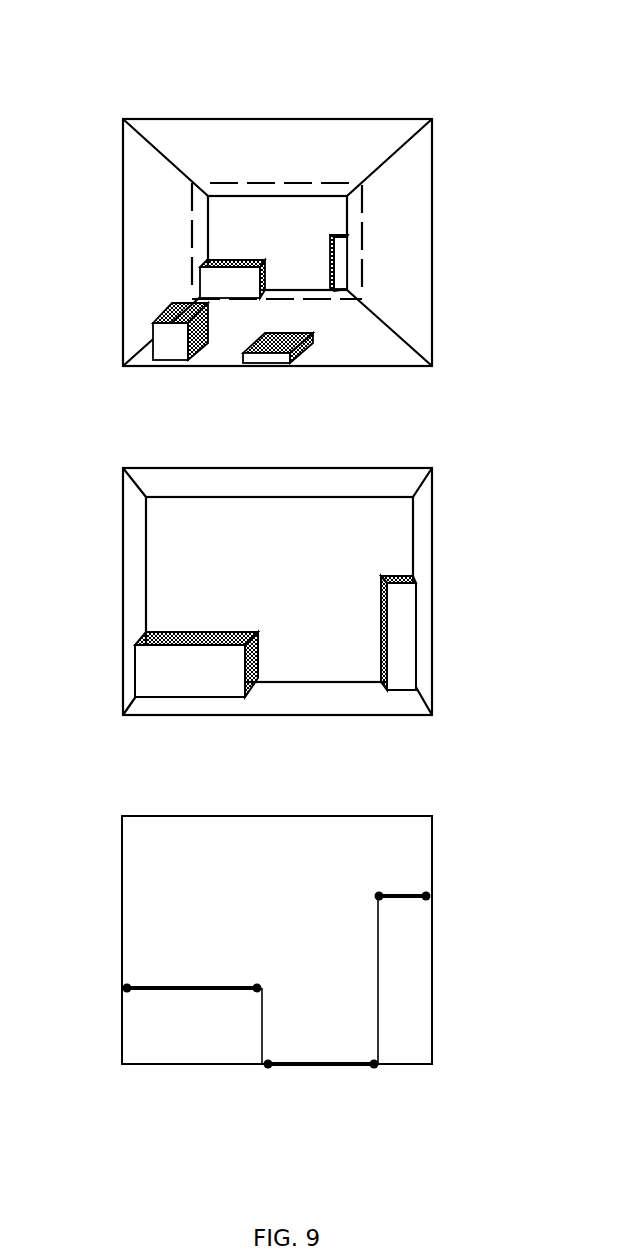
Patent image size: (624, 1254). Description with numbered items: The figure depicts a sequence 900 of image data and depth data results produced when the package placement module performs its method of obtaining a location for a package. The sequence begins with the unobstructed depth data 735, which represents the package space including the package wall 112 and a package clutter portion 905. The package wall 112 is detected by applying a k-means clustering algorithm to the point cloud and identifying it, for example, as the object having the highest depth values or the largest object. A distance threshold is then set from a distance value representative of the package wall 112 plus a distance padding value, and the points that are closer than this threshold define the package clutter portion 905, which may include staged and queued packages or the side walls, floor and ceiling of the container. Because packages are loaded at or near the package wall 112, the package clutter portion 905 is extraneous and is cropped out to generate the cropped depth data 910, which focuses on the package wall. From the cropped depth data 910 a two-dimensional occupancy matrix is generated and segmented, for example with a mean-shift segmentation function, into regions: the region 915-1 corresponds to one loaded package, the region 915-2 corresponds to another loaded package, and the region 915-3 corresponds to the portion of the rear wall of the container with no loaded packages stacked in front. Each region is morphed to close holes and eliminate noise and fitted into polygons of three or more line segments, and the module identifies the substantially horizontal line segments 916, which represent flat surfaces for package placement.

The sequence 900 is at (482, 61).
The unobstructed depth data 735 is at (178, 115).
The package wall 112 is at (279, 180).
The package clutter portion 905 is at (407, 266).
The cropped depth data 910 is at (361, 462).
The region 915-1 is at (136, 1025).
The region 915-2 is at (411, 950).
The region 915-3 is at (398, 840).
The substantially horizontal line segments 916 is at (176, 980).